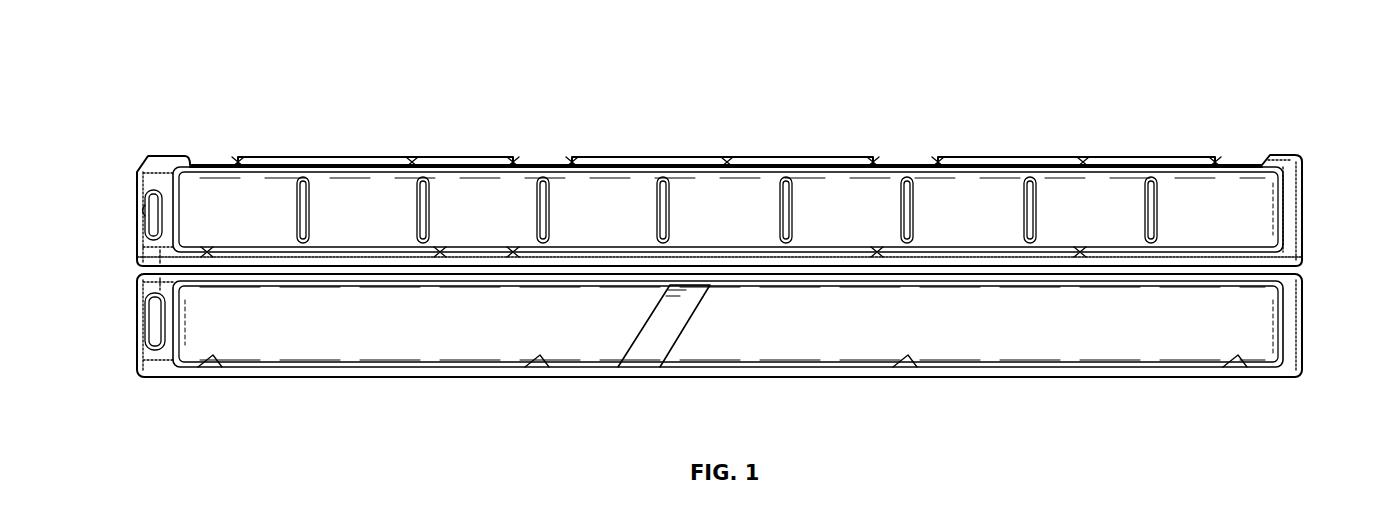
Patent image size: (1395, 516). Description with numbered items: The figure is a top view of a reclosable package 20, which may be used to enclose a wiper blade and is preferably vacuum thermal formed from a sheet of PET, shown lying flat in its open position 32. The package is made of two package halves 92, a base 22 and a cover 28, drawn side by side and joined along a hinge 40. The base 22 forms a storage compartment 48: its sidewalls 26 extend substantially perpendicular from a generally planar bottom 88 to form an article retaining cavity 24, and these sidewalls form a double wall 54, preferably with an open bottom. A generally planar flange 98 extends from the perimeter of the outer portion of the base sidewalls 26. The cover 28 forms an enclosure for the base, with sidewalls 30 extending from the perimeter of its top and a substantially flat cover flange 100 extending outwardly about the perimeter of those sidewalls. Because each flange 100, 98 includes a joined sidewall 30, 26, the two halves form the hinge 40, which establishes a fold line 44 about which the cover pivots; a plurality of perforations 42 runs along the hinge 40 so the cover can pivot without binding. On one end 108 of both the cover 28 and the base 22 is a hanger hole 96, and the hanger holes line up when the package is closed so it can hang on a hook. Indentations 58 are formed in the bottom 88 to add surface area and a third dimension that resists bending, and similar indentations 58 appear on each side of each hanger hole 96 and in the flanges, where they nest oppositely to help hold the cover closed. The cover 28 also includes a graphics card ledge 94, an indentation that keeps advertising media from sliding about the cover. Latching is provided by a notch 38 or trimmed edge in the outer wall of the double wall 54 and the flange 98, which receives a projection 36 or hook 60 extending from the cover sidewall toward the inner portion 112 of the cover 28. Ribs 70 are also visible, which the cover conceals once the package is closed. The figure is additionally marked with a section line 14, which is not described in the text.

The section line 14 is at (290, 445).
The reclosable package 20 is at (149, 132).
The base 22 is at (486, 140).
The article retaining cavity 24 is at (342, 192).
The sidewalls 26 is at (180, 212).
The cover 28 is at (460, 397).
The sidewalls 30 is at (185, 315).
The open position 32 is at (367, 98).
The projection 36 is at (220, 360).
The notch 38 is at (200, 166).
The hinge 40 is at (598, 264).
The perforations 42 is at (500, 265).
The fold line 44 is at (132, 266).
The storage compartment 48 is at (762, 183).
The double wall 54 is at (653, 166).
The indentations 58 is at (150, 171).
The hook 60 is at (213, 357).
The ribs 70 is at (240, 160).
The bottom 88 is at (1050, 170).
The package halves 92 is at (1305, 205).
The graphics card ledge 94 is at (687, 310).
The hanger hole 96 is at (155, 218).
The flange 98 is at (1120, 156).
The cover flange 100 is at (722, 378).
The end 108 is at (172, 186).
The inner portion 112 is at (1010, 328).